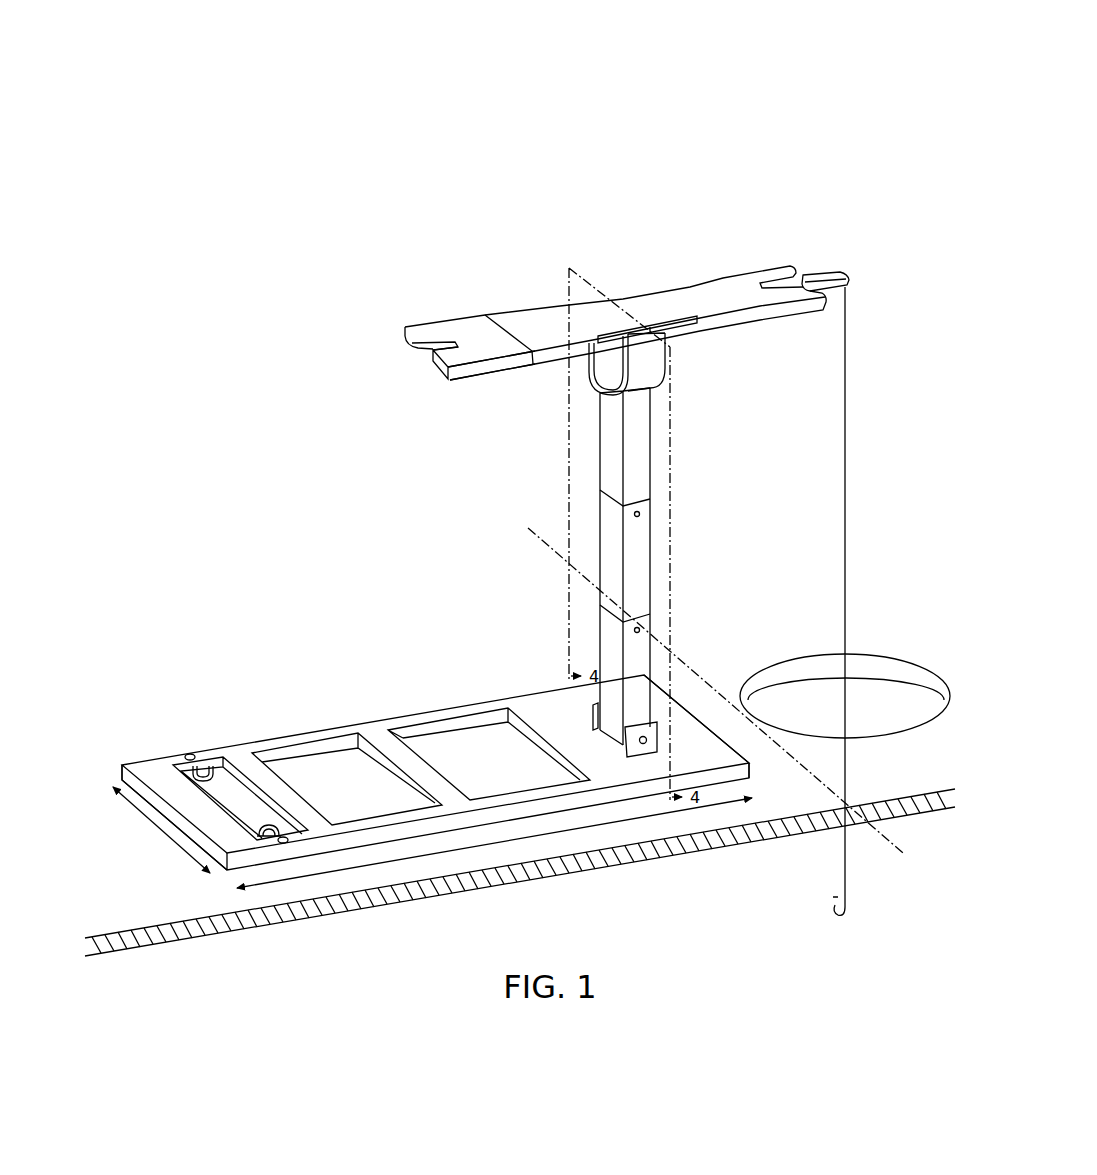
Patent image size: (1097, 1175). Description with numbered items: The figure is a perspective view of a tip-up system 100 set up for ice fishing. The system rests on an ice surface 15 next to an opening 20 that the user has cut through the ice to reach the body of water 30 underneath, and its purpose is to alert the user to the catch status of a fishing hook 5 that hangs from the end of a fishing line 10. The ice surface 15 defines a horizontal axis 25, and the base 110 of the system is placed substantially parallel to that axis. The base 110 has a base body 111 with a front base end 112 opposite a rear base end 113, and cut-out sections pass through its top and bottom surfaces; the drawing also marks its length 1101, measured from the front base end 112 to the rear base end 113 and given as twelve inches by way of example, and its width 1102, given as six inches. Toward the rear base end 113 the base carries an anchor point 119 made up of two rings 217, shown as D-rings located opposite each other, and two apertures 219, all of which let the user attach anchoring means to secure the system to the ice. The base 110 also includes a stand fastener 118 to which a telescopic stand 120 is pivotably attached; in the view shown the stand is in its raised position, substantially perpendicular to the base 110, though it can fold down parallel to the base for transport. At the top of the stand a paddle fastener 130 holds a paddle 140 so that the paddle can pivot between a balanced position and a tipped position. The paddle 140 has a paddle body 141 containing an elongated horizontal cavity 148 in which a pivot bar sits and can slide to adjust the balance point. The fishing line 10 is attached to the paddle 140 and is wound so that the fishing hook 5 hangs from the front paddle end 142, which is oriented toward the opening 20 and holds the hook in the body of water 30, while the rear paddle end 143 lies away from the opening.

The tip-up system 100 is at (736, 62).
The base 110 is at (430, 688).
The base body 111 is at (495, 705).
The front base end 112 is at (710, 745).
The rear base end 113 is at (128, 778).
The stand fastener 118 is at (624, 745).
The anchor point 119 is at (199, 744).
The telescopic stand 120 is at (596, 515).
The paddle fastener 130 is at (603, 379).
The paddle 140 is at (608, 283).
The paddle body 141 is at (530, 316).
The front paddle end 142 is at (828, 270).
The rear paddle end 143 is at (453, 368).
The elongated horizontal cavity 148 is at (700, 325).
The rings 217 is at (190, 774).
The apertures 219 is at (187, 772).
The length 1101 is at (400, 870).
The width 1102 is at (160, 838).
The fishing line 10 is at (848, 420).
The fishing hook 5 is at (846, 912).
The opening 20 is at (800, 668).
The body of water 30 is at (887, 696).
The ice surface 15 is at (785, 800).
The horizontal axis 25 is at (886, 838).